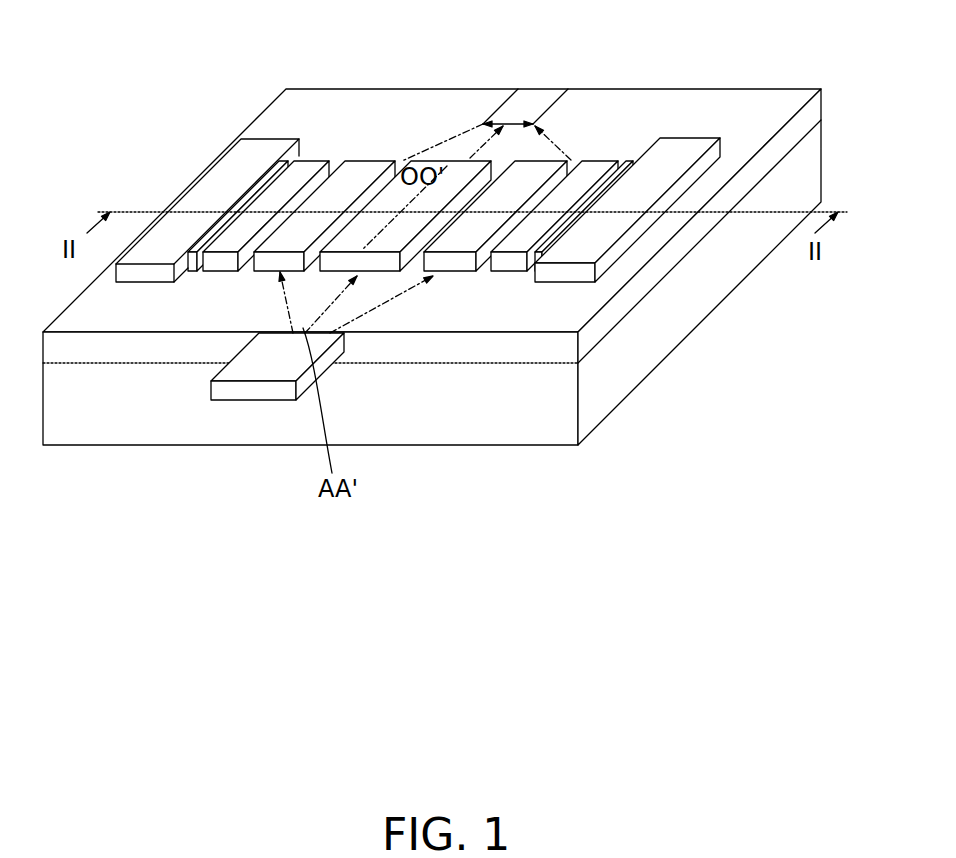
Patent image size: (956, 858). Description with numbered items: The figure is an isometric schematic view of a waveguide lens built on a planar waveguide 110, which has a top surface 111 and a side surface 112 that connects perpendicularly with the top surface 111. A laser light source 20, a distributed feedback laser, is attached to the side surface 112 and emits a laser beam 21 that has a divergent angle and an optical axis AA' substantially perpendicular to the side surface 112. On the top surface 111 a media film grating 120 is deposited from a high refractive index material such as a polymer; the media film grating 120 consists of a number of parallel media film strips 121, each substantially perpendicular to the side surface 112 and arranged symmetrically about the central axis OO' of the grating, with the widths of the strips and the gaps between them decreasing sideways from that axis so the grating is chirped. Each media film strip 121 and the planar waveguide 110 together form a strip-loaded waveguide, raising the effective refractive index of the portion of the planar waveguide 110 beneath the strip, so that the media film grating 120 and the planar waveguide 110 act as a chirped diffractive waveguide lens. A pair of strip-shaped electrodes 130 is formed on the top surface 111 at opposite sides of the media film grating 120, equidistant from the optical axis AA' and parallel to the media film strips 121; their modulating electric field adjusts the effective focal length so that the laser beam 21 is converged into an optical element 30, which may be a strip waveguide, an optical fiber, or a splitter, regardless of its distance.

The laser light source 20 is at (266, 393).
The laser beam 21 is at (387, 300).
The optical element 30 is at (523, 105).
The planar waveguide 110 is at (698, 220).
The top surface 111 is at (707, 108).
The side surface 112 is at (535, 348).
The media film grating 120 is at (373, 156).
The media film strips 121 is at (592, 173).
The strip-shaped electrodes 130 is at (227, 177).